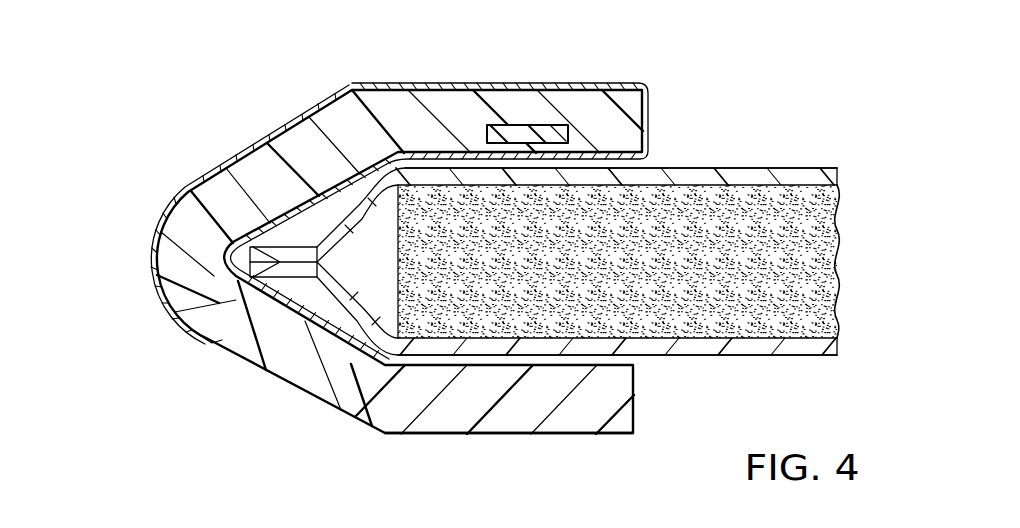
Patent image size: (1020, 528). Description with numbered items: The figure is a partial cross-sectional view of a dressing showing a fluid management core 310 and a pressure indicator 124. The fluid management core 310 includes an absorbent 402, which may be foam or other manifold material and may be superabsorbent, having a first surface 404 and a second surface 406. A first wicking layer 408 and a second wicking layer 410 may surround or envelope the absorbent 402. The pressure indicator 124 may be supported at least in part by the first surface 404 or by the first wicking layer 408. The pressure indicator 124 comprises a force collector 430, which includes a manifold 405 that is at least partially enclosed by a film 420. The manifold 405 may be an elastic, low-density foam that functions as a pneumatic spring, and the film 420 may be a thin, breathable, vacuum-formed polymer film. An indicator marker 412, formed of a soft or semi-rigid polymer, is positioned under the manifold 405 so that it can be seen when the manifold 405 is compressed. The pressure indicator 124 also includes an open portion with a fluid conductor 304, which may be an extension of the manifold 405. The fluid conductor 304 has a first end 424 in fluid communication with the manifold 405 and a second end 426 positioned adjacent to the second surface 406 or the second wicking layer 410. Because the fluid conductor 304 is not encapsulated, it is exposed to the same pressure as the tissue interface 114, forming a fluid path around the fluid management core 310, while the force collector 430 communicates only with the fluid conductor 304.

The tissue interface 114 is at (855, 200).
The pressure indicator 124 is at (523, 77).
The fluid conductor 304 is at (559, 437).
The fluid management core 310 is at (840, 245).
The absorbent 402 is at (828, 300).
The first surface 404 is at (746, 182).
The manifold 405 is at (462, 100).
The second surface 406 is at (696, 338).
The first wicking layer 408 is at (812, 172).
The second wicking layer 410 is at (800, 356).
The indicator marker 412 is at (548, 126).
The film 420 is at (628, 83).
The first end 424 is at (222, 340).
The second end 426 is at (428, 435).
The force collector 430 is at (255, 147).